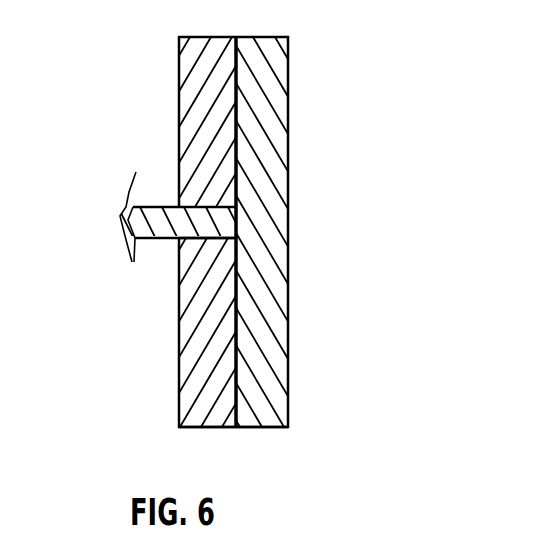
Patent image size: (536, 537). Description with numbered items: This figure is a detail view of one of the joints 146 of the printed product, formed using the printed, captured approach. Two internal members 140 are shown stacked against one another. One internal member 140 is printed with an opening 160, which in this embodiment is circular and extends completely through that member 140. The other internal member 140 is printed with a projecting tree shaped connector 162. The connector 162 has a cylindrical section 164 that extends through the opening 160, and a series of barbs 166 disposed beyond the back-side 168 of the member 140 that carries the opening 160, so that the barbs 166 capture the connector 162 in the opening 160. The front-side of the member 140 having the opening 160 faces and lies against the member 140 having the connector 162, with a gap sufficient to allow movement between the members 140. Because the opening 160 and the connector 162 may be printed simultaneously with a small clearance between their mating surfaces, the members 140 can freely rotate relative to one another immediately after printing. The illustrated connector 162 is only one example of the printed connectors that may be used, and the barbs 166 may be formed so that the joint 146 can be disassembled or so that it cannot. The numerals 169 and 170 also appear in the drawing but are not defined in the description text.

The internal member 140 is at (178, 80).
The joint 146 is at (222, 189).
The opening 160 is at (201, 227).
The tree shaped connector 162 is at (152, 213).
The cylindrical section 164 is at (203, 240).
The barbs 166 is at (136, 262).
The back-side 168 is at (178, 352).
The bottom surface 169 is at (236, 428).
The seam 170 is at (238, 330).